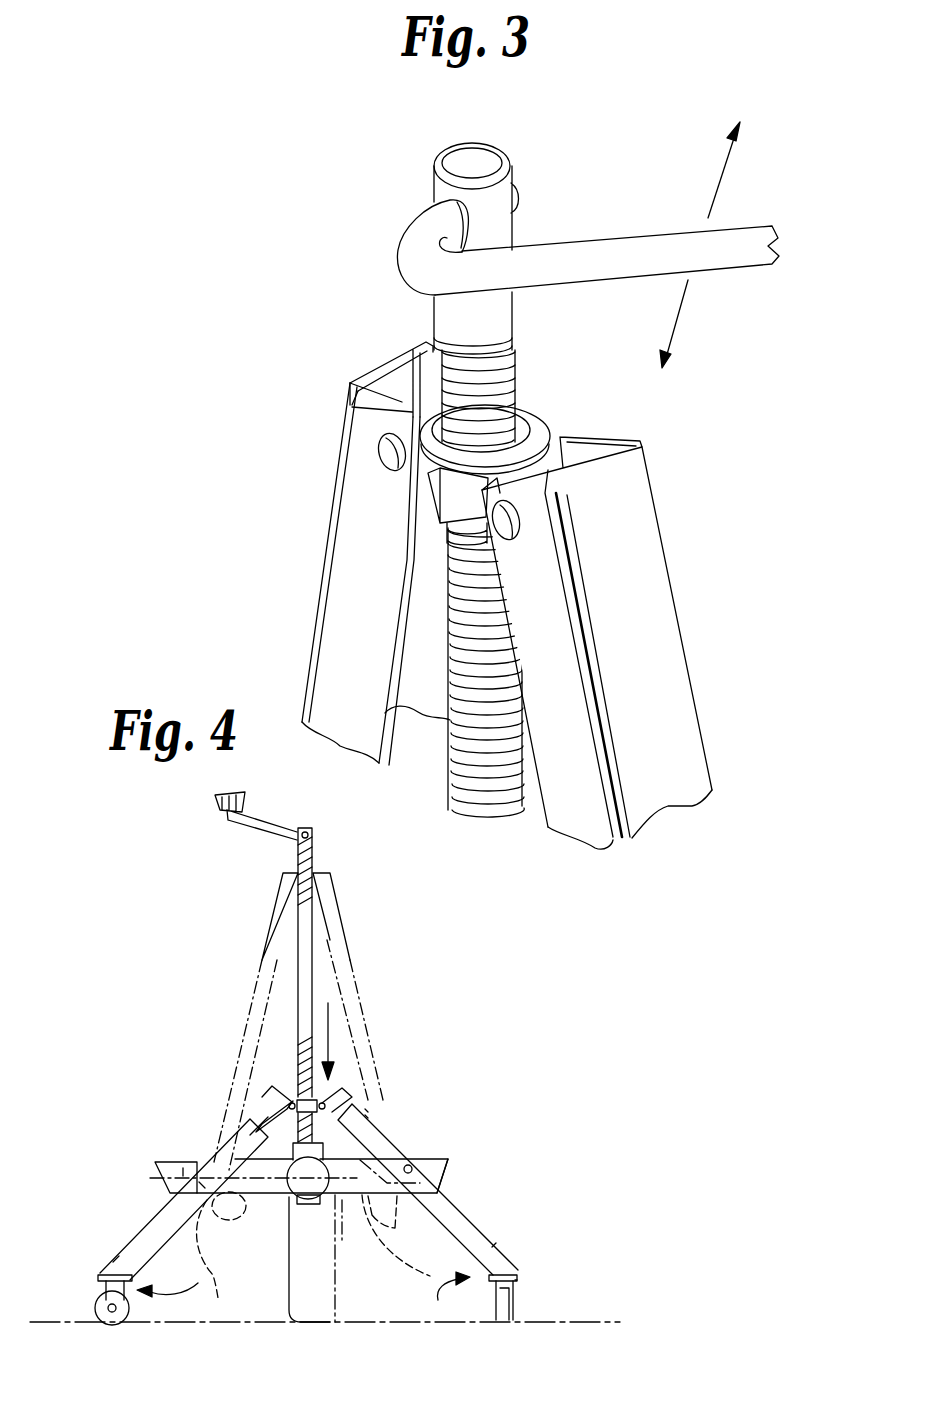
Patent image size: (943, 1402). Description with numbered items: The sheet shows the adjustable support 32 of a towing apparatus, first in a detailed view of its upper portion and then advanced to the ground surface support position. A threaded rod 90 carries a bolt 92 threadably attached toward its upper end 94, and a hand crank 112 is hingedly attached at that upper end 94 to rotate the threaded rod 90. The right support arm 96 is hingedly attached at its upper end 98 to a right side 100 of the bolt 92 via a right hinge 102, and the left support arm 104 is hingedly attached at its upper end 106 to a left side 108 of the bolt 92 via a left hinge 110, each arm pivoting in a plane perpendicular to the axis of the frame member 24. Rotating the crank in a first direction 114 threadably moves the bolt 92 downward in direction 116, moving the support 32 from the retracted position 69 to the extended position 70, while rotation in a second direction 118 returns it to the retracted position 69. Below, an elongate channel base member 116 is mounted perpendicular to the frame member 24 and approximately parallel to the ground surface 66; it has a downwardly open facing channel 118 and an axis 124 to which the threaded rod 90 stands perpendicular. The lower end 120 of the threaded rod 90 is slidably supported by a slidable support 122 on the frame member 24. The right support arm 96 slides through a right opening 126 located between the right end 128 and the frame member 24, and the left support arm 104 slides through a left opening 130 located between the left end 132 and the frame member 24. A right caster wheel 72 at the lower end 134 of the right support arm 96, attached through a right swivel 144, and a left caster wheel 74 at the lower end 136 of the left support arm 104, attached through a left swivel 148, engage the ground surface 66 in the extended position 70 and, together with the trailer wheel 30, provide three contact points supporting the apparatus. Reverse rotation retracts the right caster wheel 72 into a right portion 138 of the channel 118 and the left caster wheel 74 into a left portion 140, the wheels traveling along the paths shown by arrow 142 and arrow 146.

In FIG. 4, the frame member 24 is at (283, 1197).
In FIG. 4, the trailer wheel 30 is at (318, 1305).
In FIG. 3, the adjustable support 32 is at (392, 174).
In FIG. 4, the adjustable support 32 is at (380, 968).
In FIG. 4, the ground surface 66 is at (370, 1300).
In FIG. 4, the retracted position 69 is at (345, 922).
In FIG. 4, the extended position 70 is at (492, 1247).
In FIG. 4, the right caster wheel 72 is at (513, 1300).
In FIG. 4, the left caster wheel 74 is at (95, 1306).
In FIG. 3, the threaded rod 90 is at (522, 370).
In FIG. 4, the threaded rod 90 is at (313, 862).
In FIG. 3, the bolt 92 is at (540, 420).
In FIG. 4, the bolt 92 is at (298, 866).
In FIG. 3, the upper end 94 is at (512, 160).
In FIG. 4, the upper end 94 is at (315, 835).
In FIG. 3, the right support arm 96 is at (648, 575).
In FIG. 4, the right support arm 96 is at (445, 1212).
In FIG. 3, the upper end 98 is at (630, 516).
In FIG. 4, the upper end 98 is at (368, 1112).
In FIG. 3, the right side 100 is at (572, 452).
In FIG. 3, the right hinge 102 is at (625, 465).
In FIG. 4, the right hinge 102 is at (345, 1098).
In FIG. 3, the left support arm 104 is at (338, 555).
In FIG. 4, the left support arm 104 is at (155, 1232).
In FIG. 3, the upper end 106 is at (342, 448).
In FIG. 4, the upper end 106 is at (262, 1098).
In FIG. 3, the left side 108 is at (413, 383).
In FIG. 3, the left hinge 110 is at (420, 395).
In FIG. 4, the left hinge 110 is at (278, 1095).
In FIG. 3, the hand crank 112 is at (780, 246).
In FIG. 4, the hand crank 112 is at (246, 800).
In FIG. 3, the first direction 114 is at (724, 170).
In FIG. 4, the channel base member 116 is at (332, 1038).
In FIG. 3, the channel 118 is at (678, 318).
In FIG. 4, the channel 118 is at (440, 1180).
In FIG. 4, the lower end 120 is at (250, 1127).
In FIG. 4, the slidable support 122 is at (368, 1118).
In FIG. 4, the axis 124 is at (364, 1236).
In FIG. 4, the right opening 126 is at (440, 1157).
In FIG. 4, the right end 128 is at (450, 1158).
In FIG. 4, the left opening 130 is at (200, 1170).
In FIG. 4, the left end 132 is at (155, 1165).
In FIG. 4, the lower end 134 is at (517, 1272).
In FIG. 4, the lower end 136 is at (113, 1262).
In FIG. 4, the right portion 138 is at (399, 1235).
In FIG. 4, the left portion 140 is at (209, 1245).
In FIG. 4, the arrow 142 is at (431, 1292).
In FIG. 4, the right swivel 144 is at (517, 1280).
In FIG. 4, the arrow 146 is at (201, 1303).
In FIG. 4, the left swivel 148 is at (98, 1278).